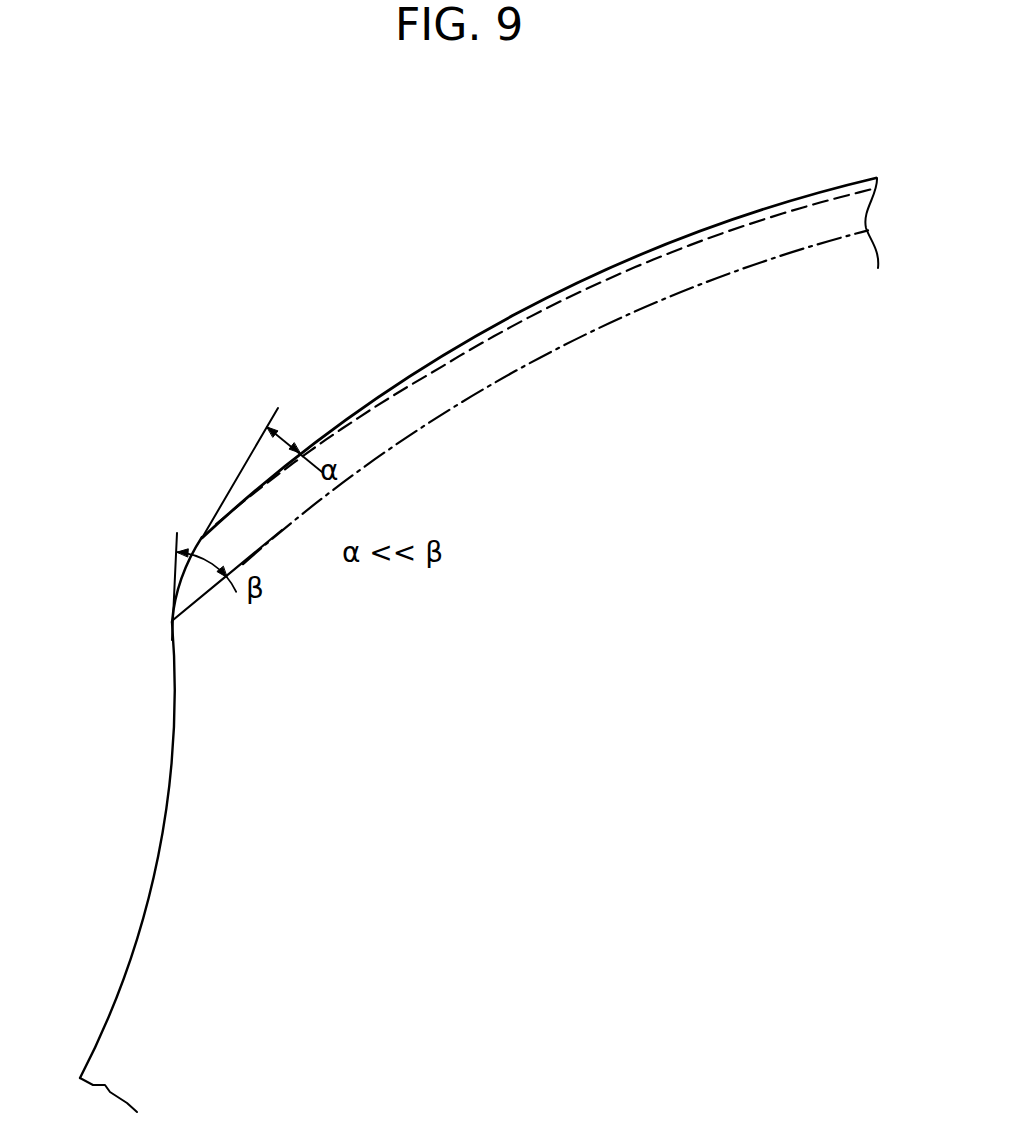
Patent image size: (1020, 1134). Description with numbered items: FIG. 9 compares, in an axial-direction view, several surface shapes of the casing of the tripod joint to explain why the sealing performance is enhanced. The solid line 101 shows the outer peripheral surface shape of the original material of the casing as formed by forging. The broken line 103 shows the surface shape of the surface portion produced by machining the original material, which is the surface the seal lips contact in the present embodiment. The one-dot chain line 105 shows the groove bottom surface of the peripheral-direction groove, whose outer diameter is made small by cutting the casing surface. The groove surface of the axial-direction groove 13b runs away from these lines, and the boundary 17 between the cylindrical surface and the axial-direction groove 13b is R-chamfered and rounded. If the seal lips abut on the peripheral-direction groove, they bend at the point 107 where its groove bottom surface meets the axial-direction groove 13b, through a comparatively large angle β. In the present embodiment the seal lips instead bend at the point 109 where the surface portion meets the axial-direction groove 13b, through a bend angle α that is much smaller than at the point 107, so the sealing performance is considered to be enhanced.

The axial-direction groove 13b is at (161, 835).
The boundary 17 is at (192, 577).
The solid line 101 is at (427, 365).
The broken line 103 is at (333, 438).
The one-dot chain line 105 is at (534, 360).
The point 107 is at (172, 622).
The point 109 is at (202, 537).